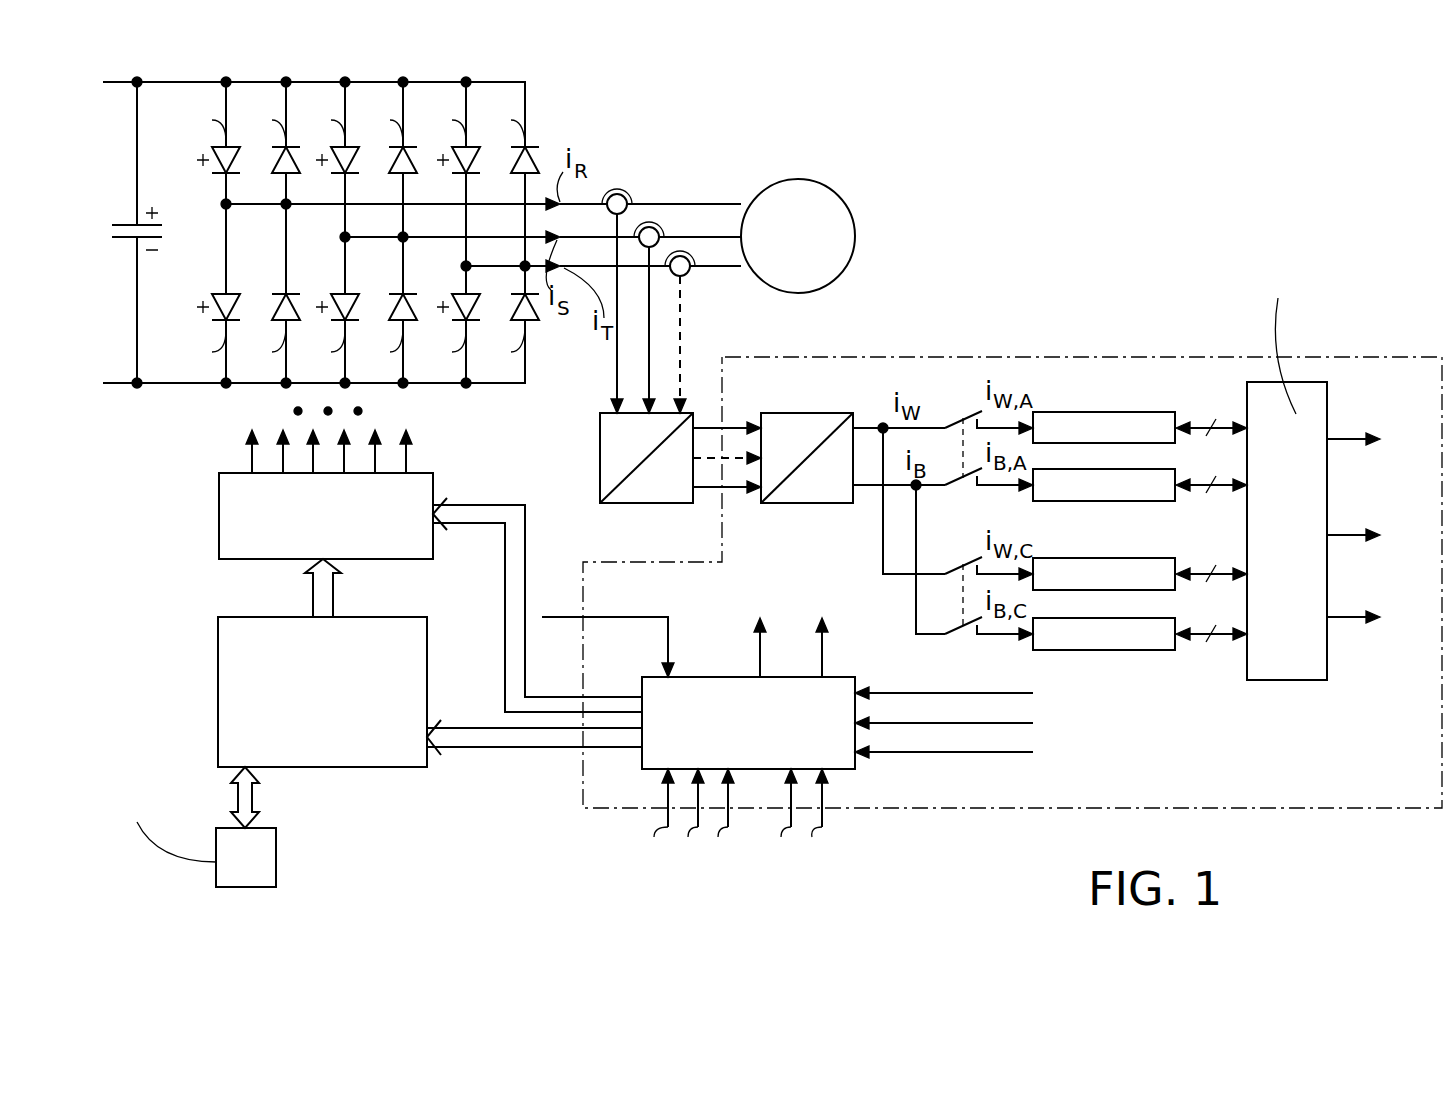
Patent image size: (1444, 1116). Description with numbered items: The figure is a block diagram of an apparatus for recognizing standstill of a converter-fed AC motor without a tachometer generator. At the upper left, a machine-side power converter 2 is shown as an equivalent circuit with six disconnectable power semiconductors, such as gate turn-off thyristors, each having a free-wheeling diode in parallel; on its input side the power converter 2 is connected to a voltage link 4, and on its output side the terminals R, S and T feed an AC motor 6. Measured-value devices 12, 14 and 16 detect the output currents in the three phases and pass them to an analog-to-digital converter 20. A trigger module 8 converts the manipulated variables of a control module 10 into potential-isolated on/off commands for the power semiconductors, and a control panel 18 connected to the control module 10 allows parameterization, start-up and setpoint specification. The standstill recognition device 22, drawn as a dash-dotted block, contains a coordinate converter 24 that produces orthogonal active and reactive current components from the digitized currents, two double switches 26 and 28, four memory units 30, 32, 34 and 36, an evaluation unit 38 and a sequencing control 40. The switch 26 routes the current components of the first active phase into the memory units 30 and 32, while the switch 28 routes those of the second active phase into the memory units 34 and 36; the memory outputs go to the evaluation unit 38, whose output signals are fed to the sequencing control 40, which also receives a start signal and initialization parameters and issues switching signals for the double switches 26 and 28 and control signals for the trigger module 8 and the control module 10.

The power converter 2 is at (427, 82).
The voltage link 4 is at (137, 196).
The AC motor 6 is at (812, 188).
The trigger module 8 is at (219, 514).
The control module 10 is at (218, 660).
The measured-value device 12 is at (617, 192).
The measured-value device 14 is at (652, 224).
The measured-value device 16 is at (683, 282).
The control panel 18 is at (276, 871).
The analog-to-digital converter 20 is at (600, 470).
The standstill recognition device 22 is at (1185, 760).
The coordinate converter 24 is at (826, 413).
The double switch 26 is at (970, 416).
The double switch 28 is at (965, 570).
The memory unit 30 is at (1075, 412).
The memory unit 32 is at (1094, 501).
The memory unit 34 is at (1102, 558).
The memory unit 36 is at (1091, 650).
The evaluation unit 38 is at (1308, 680).
The sequencing control 40 is at (680, 677).